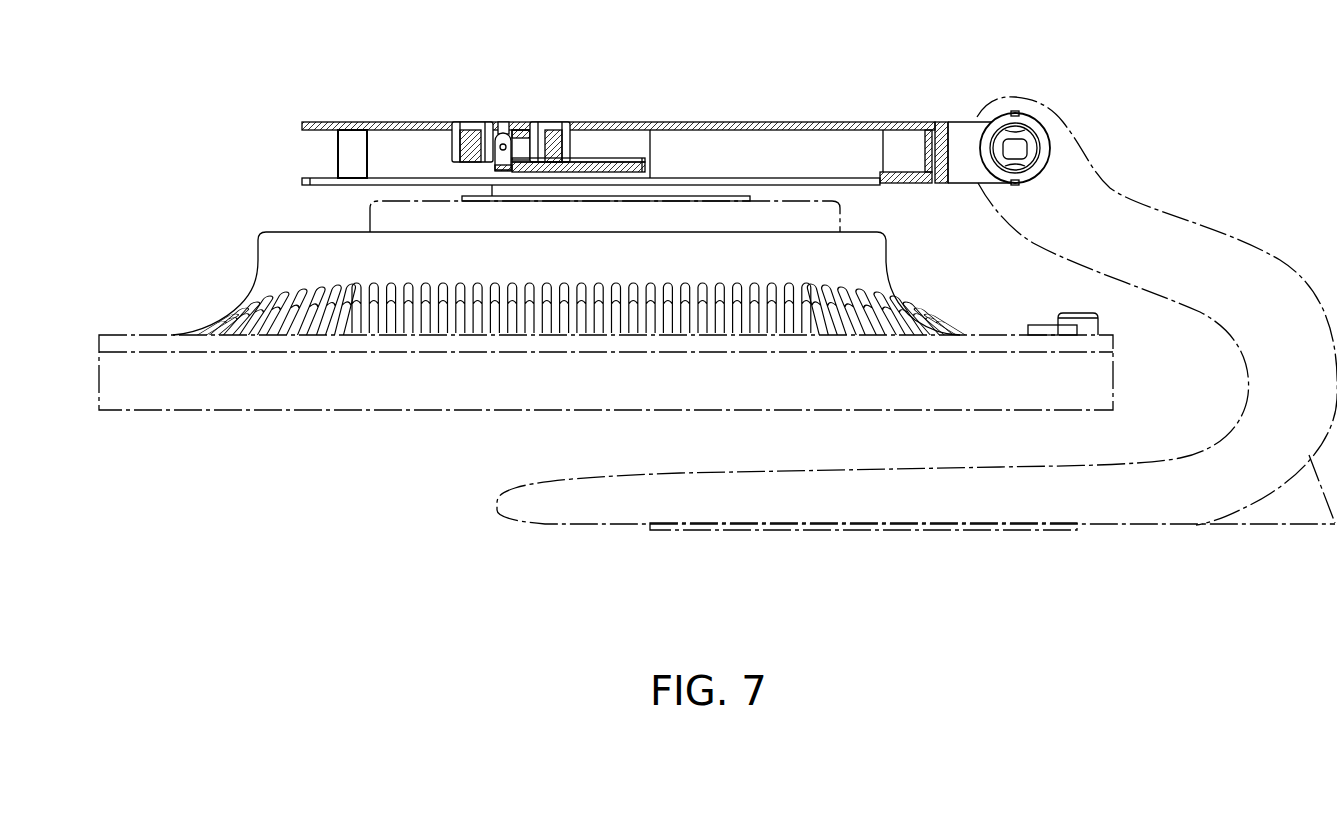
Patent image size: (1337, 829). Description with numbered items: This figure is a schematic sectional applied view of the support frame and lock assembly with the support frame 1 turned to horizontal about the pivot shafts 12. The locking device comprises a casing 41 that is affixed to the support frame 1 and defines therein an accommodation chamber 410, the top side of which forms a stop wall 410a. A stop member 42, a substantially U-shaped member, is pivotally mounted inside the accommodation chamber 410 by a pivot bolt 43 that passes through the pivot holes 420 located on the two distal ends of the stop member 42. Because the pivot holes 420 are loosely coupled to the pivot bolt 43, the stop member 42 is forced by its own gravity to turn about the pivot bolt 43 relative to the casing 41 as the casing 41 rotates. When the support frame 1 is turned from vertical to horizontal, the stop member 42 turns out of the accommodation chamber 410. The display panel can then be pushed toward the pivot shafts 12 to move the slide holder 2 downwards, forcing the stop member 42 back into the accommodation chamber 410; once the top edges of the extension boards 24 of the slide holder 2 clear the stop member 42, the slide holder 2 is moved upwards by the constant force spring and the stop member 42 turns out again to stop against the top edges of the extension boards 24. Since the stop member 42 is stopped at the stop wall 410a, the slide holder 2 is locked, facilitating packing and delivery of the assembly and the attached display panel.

The support frame 1 is at (380, 142).
The slide holder 2 is at (645, 135).
The pivot shaft 12 is at (988, 117).
The extension board 24 is at (593, 160).
The casing 41 is at (450, 140).
The stop member 42 is at (478, 130).
The pivot bolt 43 is at (503, 122).
The accommodation chamber 410 is at (530, 128).
The stop wall 410a is at (478, 152).
The pivot hole 420 is at (517, 130).